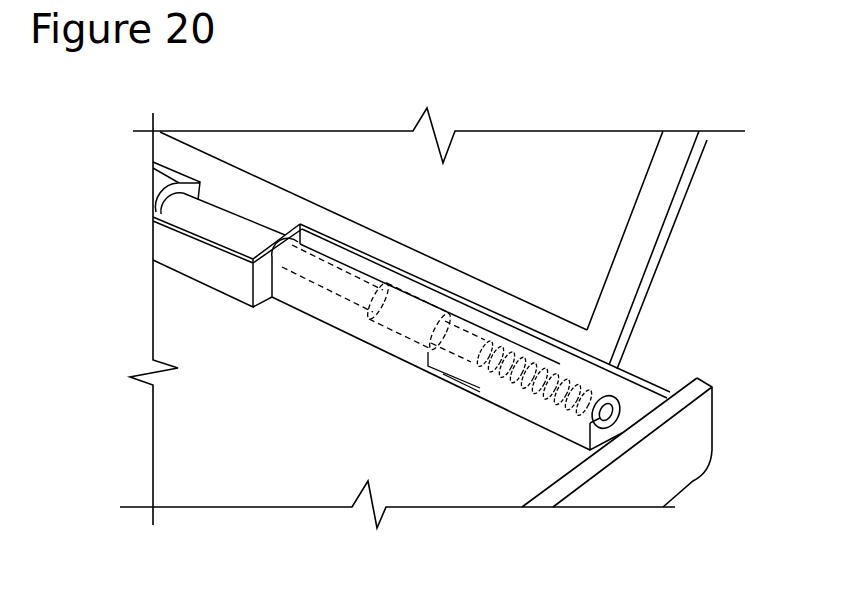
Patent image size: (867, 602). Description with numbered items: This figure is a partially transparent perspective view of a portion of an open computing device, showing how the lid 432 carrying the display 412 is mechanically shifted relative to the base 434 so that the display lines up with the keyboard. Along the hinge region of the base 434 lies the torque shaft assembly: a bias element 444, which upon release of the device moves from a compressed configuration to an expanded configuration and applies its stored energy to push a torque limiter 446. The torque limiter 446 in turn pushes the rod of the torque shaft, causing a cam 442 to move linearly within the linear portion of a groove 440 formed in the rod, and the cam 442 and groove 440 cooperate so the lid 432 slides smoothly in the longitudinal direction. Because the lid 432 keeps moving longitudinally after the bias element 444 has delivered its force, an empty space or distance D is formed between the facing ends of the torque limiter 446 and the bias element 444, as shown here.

The display 412 is at (421, 150).
The lid 432 is at (656, 209).
The base 434 is at (688, 433).
The groove 440 is at (245, 220).
The cam 442 is at (312, 298).
The bias element 444 is at (618, 393).
The torque limiter 446 is at (405, 323).
The distance D is at (447, 374).